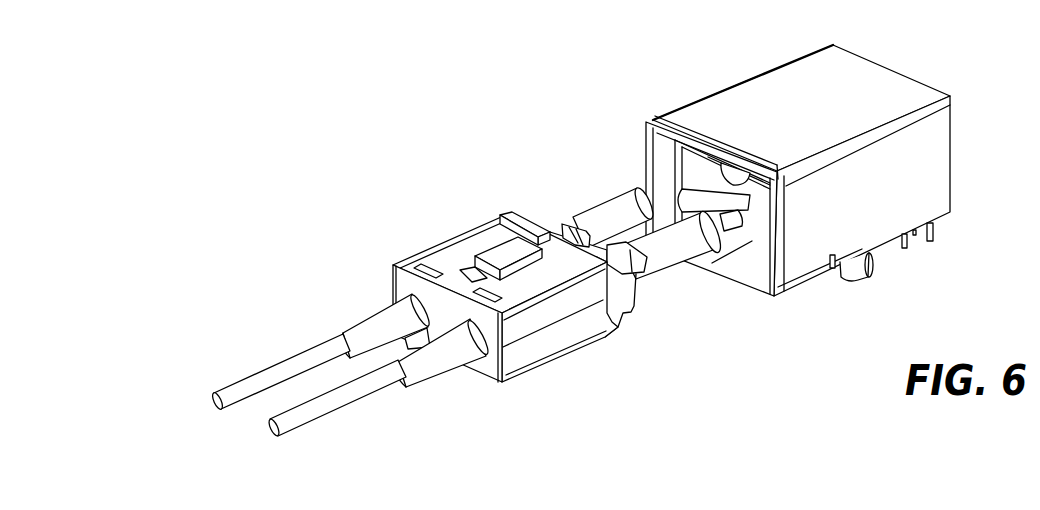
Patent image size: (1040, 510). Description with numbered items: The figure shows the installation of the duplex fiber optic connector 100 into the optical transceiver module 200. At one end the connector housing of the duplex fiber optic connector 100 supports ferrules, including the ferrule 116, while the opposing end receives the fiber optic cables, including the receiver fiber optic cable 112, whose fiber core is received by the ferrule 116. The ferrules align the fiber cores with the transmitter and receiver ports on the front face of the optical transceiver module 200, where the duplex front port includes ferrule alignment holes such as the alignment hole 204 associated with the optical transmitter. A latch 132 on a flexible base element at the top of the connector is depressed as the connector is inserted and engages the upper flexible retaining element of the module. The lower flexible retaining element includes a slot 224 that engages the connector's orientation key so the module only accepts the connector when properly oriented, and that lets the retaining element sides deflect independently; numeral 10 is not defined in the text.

The optical connector system 10 is at (250, 360).
The duplex fiber optic connector 100 is at (462, 244).
The receiver fiber optic cable 112 is at (336, 430).
The ferrule 116 is at (600, 200).
The latch 132 is at (565, 223).
The optical transceiver module 200 is at (744, 222).
The ferrule alignment hole 204 is at (740, 190).
The slot 224 is at (729, 229).